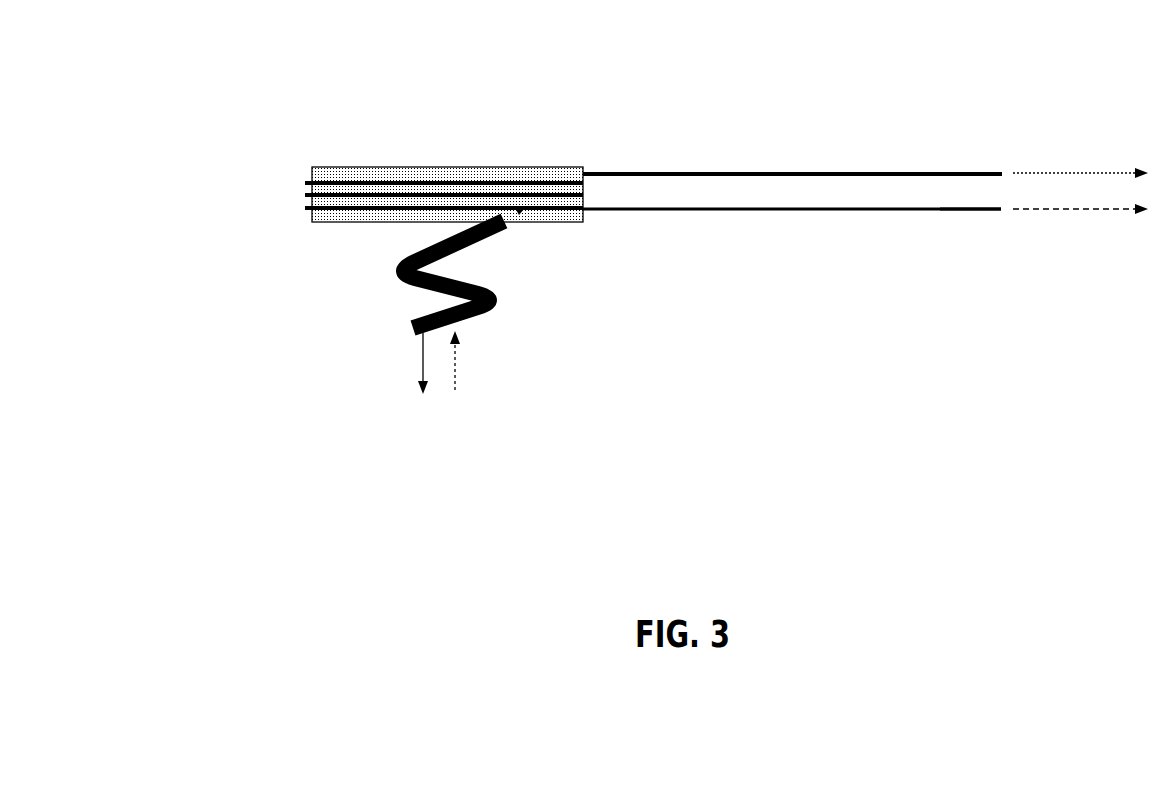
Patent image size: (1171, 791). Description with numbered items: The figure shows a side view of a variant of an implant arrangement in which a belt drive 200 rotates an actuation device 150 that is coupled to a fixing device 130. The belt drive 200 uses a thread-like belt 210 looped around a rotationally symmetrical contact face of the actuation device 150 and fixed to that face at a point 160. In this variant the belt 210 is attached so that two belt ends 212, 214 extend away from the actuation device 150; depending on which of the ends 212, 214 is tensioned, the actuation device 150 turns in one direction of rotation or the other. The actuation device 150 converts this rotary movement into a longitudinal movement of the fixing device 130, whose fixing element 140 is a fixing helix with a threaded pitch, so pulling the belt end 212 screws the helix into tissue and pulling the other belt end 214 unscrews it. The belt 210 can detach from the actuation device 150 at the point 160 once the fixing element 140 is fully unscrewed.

The fixing device 130 is at (485, 310).
The fixing element 140 is at (439, 362).
The actuation device 150 is at (317, 210).
The point 160 is at (518, 210).
The belt drive 200 is at (790, 172).
The belt 210 is at (757, 212).
The belt end 212 is at (963, 172).
The belt end 214 is at (967, 212).